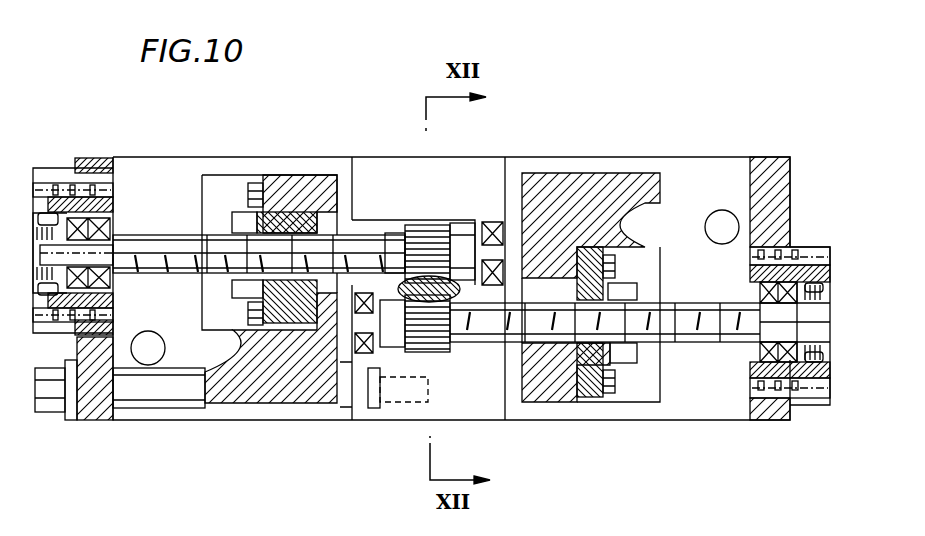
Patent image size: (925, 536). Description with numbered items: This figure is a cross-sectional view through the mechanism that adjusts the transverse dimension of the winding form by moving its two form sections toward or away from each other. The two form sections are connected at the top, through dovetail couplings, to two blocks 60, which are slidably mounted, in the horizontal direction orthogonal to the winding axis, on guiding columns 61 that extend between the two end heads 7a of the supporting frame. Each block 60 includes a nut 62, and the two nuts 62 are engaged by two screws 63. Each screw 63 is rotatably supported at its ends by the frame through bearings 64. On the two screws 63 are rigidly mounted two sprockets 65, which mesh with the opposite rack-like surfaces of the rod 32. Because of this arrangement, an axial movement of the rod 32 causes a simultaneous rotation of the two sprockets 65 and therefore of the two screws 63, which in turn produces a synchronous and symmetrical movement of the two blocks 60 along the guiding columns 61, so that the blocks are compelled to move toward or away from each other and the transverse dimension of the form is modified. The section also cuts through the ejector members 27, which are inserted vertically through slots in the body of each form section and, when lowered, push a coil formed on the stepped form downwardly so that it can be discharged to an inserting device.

The end head 7a is at (766, 186).
The ejector member 27 is at (148, 333).
The rod 32 is at (441, 272).
The block 60 is at (271, 411).
The guiding column 61 is at (165, 395).
The nut 62 is at (279, 188).
The screw 63 is at (163, 245).
The bearing 64 is at (95, 158).
The sprocket 65 is at (420, 224).